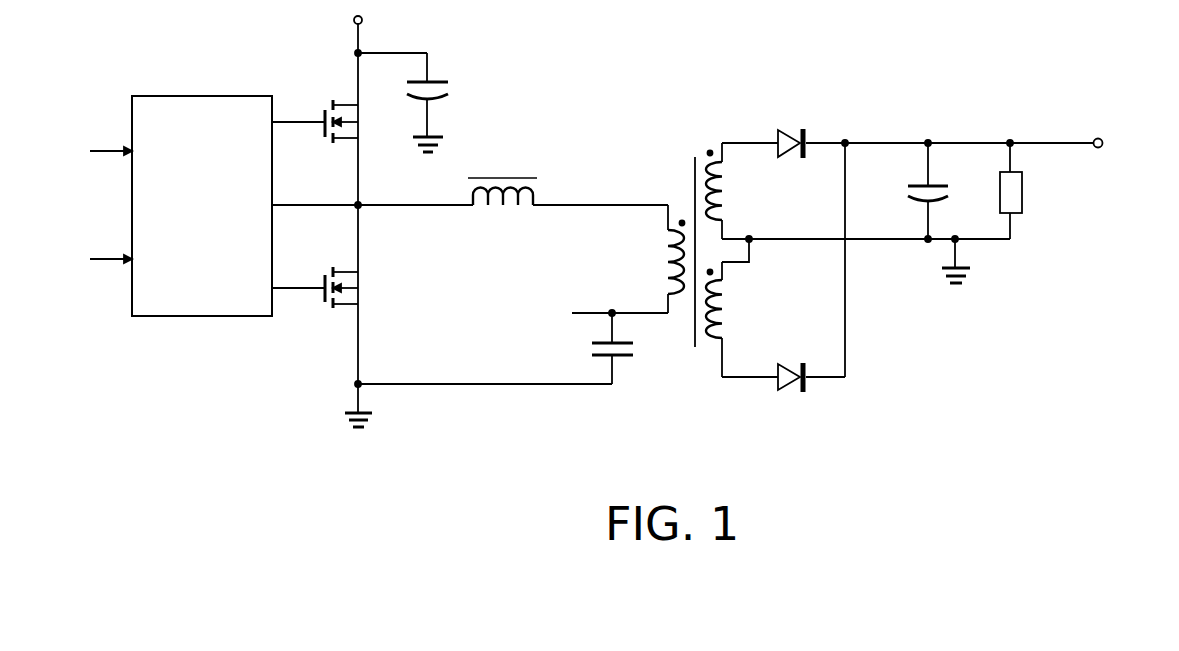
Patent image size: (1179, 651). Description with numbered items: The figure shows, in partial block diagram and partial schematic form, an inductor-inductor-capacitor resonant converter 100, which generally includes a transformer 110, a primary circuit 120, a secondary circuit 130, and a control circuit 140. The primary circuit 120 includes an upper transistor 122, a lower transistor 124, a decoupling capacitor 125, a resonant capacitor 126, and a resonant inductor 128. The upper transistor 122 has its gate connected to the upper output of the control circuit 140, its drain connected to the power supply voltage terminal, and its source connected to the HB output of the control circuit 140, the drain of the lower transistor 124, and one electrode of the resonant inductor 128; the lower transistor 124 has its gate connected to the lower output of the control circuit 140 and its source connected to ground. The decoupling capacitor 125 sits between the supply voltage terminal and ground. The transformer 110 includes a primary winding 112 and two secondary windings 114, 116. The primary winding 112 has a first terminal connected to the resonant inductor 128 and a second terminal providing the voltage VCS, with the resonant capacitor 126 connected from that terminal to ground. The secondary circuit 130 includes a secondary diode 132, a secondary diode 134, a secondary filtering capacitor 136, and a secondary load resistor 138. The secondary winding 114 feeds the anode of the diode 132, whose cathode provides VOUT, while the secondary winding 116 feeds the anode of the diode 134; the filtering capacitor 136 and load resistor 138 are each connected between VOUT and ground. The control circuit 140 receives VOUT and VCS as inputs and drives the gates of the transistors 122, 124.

The LLC resonant converter 100 is at (520, 508).
The transformer 110 is at (696, 91).
The primary winding 112 is at (668, 260).
The secondary winding 114 is at (725, 178).
The secondary winding 116 is at (725, 295).
The primary circuit 120 is at (514, 60).
The upper transistor 122 is at (325, 101).
The lower transistor 124 is at (325, 272).
The decoupling capacitor 125 is at (443, 79).
The resonant capacitor 126 is at (626, 360).
The resonant inductor 128 is at (516, 208).
The secondary circuit 130 is at (907, 89).
The secondary diode 132 is at (805, 130).
The secondary diode 134 is at (805, 363).
The secondary filtering capacitor 136 is at (915, 184).
The secondary load resistor 138 is at (1023, 192).
The control circuit 140 is at (214, 96).